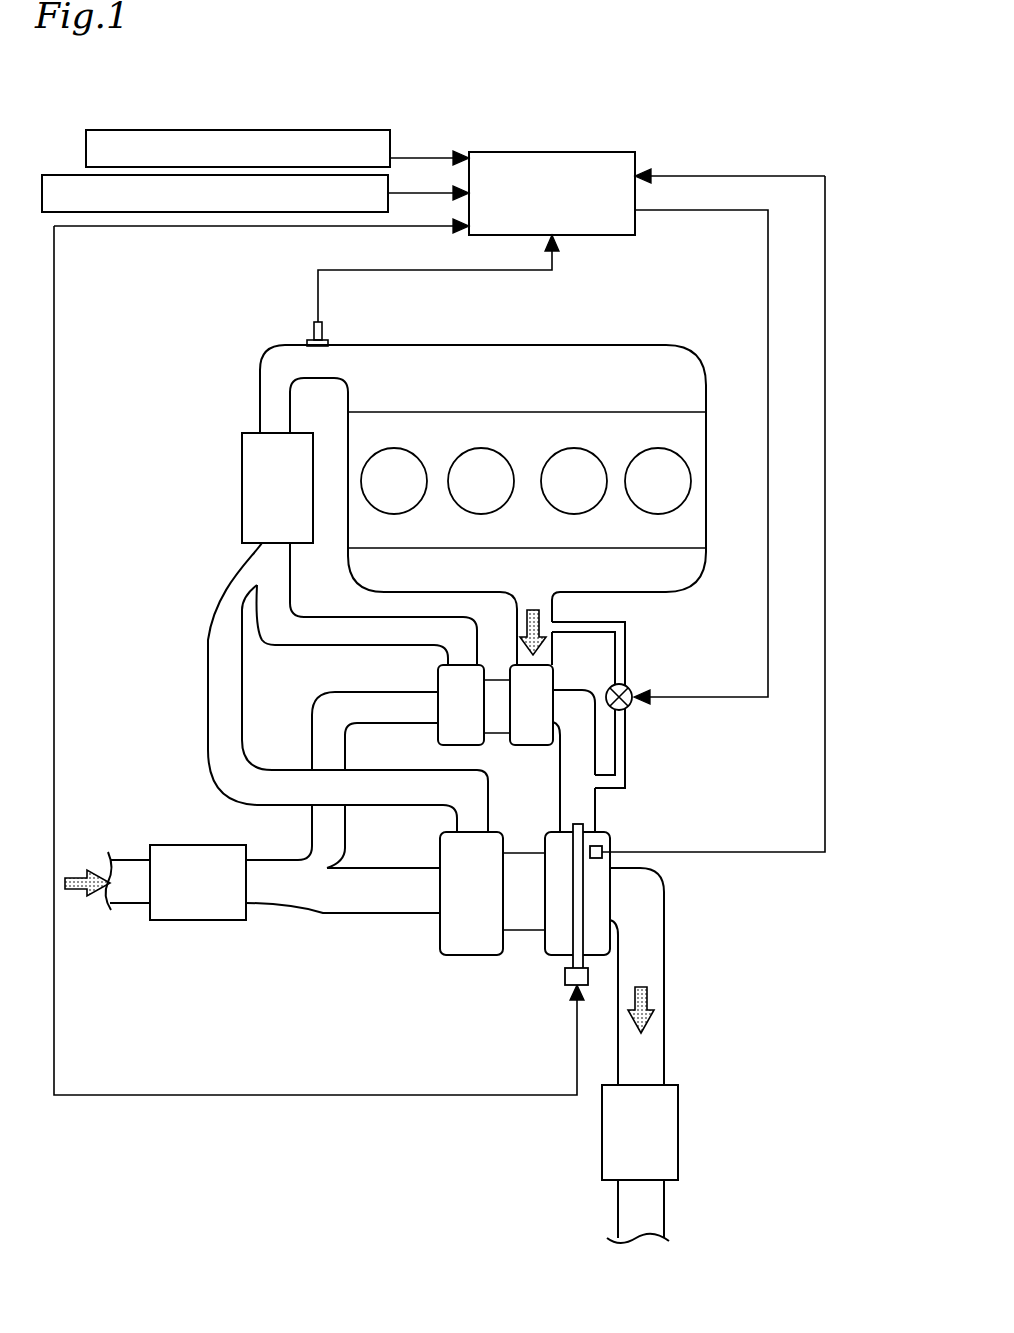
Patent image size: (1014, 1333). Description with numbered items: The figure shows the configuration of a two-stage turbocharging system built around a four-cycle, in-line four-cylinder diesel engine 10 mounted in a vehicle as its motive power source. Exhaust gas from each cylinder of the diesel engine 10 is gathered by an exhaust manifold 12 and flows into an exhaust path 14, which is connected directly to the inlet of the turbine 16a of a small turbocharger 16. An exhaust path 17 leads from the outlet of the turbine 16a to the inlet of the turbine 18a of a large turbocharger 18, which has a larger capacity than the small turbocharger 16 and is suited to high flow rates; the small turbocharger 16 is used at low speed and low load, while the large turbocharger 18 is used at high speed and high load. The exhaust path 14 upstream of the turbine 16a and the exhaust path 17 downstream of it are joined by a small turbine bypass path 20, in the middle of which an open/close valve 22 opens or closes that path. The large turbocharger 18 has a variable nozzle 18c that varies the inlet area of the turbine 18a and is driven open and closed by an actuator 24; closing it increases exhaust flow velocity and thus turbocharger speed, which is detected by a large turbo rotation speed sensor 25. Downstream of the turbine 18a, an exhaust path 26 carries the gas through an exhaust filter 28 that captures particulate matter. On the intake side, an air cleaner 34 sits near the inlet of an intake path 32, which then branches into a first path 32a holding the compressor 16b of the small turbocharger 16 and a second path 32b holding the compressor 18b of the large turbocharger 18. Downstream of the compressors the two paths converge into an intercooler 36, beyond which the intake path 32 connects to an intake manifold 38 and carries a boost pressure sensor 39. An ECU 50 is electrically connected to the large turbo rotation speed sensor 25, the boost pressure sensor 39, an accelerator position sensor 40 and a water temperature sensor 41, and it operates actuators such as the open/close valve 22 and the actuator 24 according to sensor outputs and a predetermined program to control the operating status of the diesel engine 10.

The diesel engine 10 is at (716, 488).
The exhaust manifold 12 is at (675, 593).
The exhaust path 14 is at (512, 652).
The small turbocharger 16 is at (479, 715).
The turbine 16a is at (544, 680).
The compressor 16b is at (453, 688).
The exhaust path 17 is at (560, 808).
The large turbocharger 18 is at (565, 929).
The turbine 18a is at (594, 904).
The compressor 18b is at (468, 942).
The variable nozzle 18c is at (584, 934).
The small turbine bypass path 20 is at (628, 650).
The open/close valve 22 is at (629, 707).
The actuator 24 is at (565, 983).
The large turbo rotation speed sensor 25 is at (605, 848).
The exhaust path 26 is at (668, 1020).
The exhaust filter 28 is at (680, 1137).
The intake path 32 is at (258, 402).
The first path 32a is at (310, 750).
The second path 32b is at (389, 914).
The air cleaner 34 is at (198, 845).
The intercooler 36 is at (241, 486).
The intake manifold 38 is at (502, 345).
The boost pressure sensor 39 is at (323, 325).
The accelerator position sensor 40 is at (54, 176).
The water temperature sensor 41 is at (328, 130).
The ECU 50 is at (549, 152).